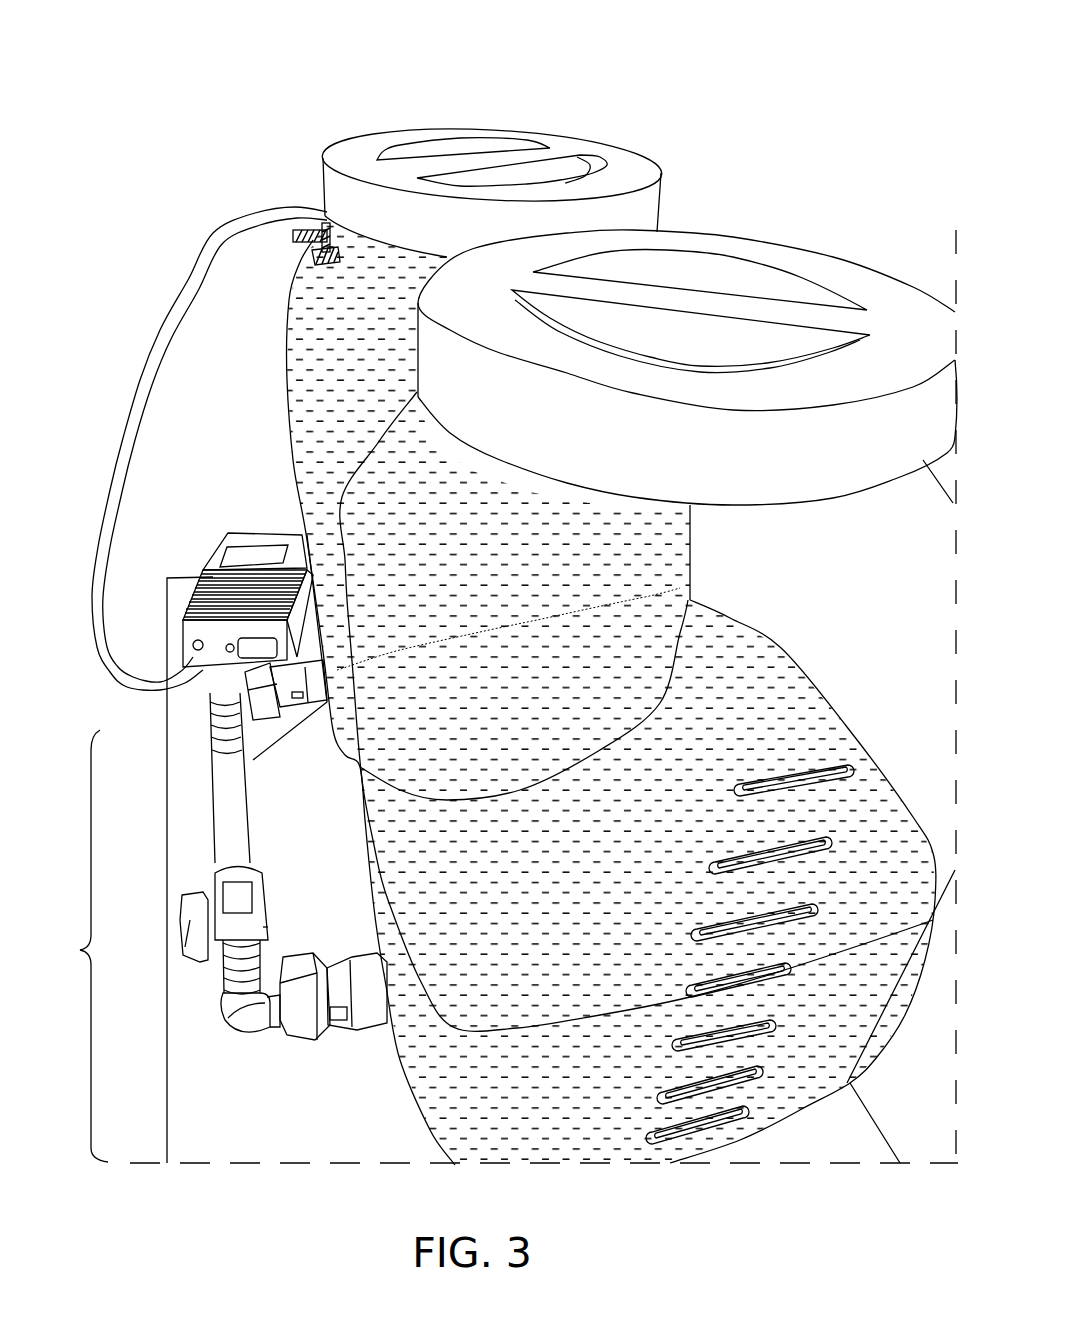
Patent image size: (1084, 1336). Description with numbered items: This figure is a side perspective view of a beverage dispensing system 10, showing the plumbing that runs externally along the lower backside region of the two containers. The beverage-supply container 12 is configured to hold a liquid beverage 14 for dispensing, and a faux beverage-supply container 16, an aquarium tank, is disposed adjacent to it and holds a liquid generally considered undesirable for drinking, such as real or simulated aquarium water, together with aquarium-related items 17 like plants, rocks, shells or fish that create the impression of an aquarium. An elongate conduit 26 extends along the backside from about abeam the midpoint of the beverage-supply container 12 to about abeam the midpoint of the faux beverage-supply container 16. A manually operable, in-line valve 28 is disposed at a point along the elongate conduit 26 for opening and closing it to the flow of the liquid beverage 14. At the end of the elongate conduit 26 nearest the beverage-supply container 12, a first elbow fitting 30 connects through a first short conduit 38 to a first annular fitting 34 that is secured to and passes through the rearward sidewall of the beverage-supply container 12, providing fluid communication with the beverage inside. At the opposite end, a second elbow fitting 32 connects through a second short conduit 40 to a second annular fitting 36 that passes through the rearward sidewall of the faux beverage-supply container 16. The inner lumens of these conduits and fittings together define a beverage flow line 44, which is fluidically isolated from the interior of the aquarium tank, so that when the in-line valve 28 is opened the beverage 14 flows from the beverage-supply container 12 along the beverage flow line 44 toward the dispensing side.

The beverage dispensing system 10 is at (165, 130).
The beverage-supply container 12 is at (880, 530).
The liquid beverage 14 is at (848, 997).
The faux beverage-supply container 16 is at (320, 355).
The aquarium-related items 17 is at (483, 130).
The elongate conduit 26 is at (195, 840).
The in-line valve 28 is at (175, 965).
The first elbow fitting 30 is at (240, 1017).
The second elbow fitting 32 is at (223, 705).
The first annular fitting 34 is at (373, 997).
The second annular fitting 36 is at (327, 702).
The first short conduit 38 is at (308, 1030).
The second short conduit 40 is at (245, 690).
The beverage flow line 44 is at (74, 946).